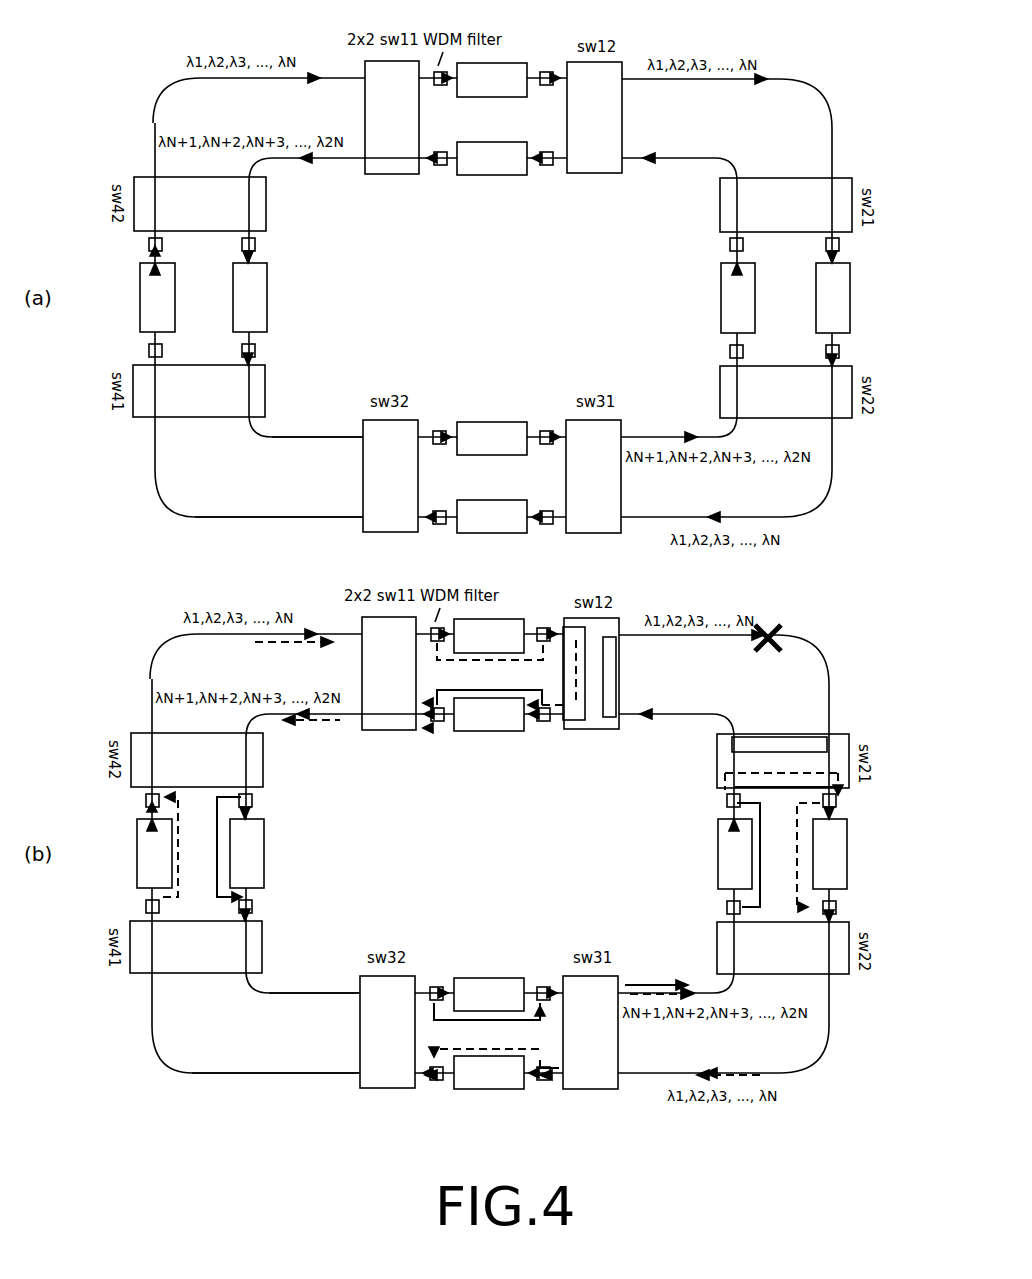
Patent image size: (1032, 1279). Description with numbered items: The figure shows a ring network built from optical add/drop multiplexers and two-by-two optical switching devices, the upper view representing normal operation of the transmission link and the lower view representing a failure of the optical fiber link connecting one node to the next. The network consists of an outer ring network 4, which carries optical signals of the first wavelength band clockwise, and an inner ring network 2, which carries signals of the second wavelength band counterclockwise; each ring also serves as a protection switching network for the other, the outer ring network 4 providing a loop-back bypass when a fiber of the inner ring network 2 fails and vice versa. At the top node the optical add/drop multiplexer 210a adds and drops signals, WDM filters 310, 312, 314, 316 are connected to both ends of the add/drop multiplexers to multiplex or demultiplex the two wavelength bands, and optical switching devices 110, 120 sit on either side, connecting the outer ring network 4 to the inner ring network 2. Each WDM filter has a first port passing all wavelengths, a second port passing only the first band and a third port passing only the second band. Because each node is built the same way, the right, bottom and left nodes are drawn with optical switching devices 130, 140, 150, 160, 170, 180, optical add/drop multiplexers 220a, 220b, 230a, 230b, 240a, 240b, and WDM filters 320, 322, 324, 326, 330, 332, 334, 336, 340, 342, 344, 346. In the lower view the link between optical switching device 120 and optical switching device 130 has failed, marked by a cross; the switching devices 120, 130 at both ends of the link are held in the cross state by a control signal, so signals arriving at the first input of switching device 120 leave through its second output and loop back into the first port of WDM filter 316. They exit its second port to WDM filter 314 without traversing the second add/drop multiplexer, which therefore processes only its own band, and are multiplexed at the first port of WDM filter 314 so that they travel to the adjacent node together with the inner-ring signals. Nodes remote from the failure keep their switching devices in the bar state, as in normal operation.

The 2×2 optical switching device 110 is at (383, 175).
The 2×2 optical switching device 120 is at (588, 174).
The optical switching device 130 is at (720, 205).
The optical switch sw22 140 is at (720, 393).
The optical switch sw31 150 is at (597, 534).
The optical switch sw32 160 is at (376, 533).
The optical switch sw41 170 is at (266, 381).
The optical switch sw42 180 is at (266, 210).
The optical add/drop multiplexer 210a is at (490, 62).
The OADM2a 220a is at (851, 301).
The OADM2b 220b is at (720, 302).
The OADM3b 230a is at (480, 421).
The OADM3a 230b is at (470, 534).
The OADM4a 240a is at (140, 299).
The OADM4b 240b is at (267, 290).
The WDM filter 310 is at (440, 86).
The WDM filter 312 is at (546, 71).
The WDM filter 314 is at (440, 166).
The WDM filter 316 is at (546, 166).
The WDM filter 320 is at (840, 246).
The WDM filter 322 is at (840, 353).
The WDM filter 324 is at (729, 246).
The WDM filter 326 is at (729, 353).
The WDM filter 330 is at (546, 525).
The WDM filter 332 is at (439, 525).
The WDM filter 334 is at (546, 430).
The WDM filter 336 is at (439, 430).
The WDM filter 340 is at (148, 350).
The WDM filter 342 is at (148, 244).
The WDM filter 344 is at (256, 351).
The WDM filter 346 is at (256, 245).
The inner ring network 2 is at (320, 436).
The outer ring network 4 is at (262, 516).